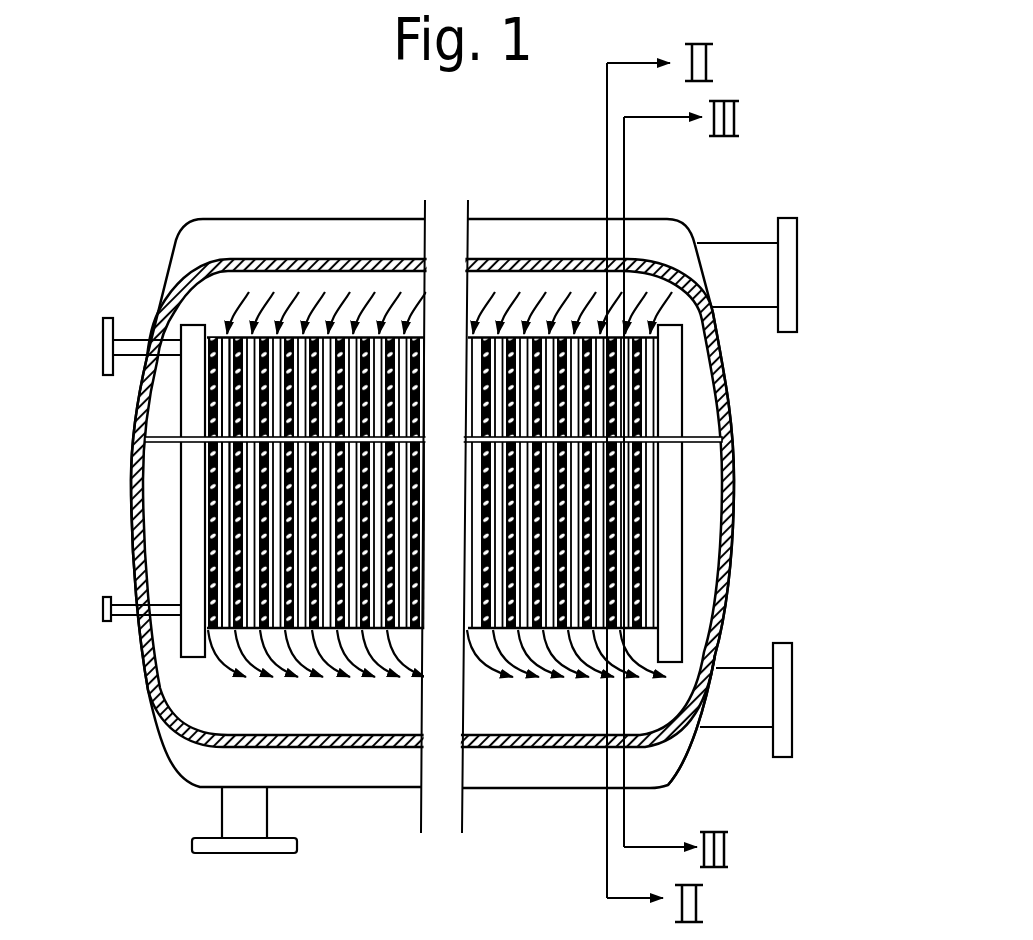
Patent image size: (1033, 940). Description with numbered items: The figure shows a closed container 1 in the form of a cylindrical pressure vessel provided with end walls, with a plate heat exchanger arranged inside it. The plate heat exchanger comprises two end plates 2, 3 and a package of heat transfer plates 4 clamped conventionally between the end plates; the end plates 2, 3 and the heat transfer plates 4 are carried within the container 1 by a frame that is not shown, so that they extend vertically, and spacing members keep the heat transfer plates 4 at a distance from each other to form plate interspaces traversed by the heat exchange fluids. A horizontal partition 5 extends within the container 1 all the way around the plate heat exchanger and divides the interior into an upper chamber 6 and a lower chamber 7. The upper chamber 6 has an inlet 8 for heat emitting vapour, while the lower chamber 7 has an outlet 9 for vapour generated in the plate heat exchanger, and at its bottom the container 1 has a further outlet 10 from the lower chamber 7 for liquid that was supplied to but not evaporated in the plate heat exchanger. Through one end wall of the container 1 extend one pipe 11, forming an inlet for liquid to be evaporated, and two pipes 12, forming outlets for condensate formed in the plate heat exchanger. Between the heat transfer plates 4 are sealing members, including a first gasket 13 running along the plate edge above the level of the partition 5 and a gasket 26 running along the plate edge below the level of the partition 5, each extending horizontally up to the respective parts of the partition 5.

The container 1 is at (213, 242).
The end plate 2 is at (190, 338).
The end plate 3 is at (673, 400).
The heat transfer plates 4 is at (653, 552).
The partition 5 is at (722, 441).
The upper chamber 6 is at (708, 417).
The lower chamber 7 is at (700, 630).
The inlet 8 is at (768, 263).
The outlet 9 is at (747, 706).
The outlet 10 is at (243, 827).
The pipe 11 is at (106, 330).
The pipes 12 is at (108, 602).
The first gasket 13 is at (212, 400).
The gasket 26 is at (223, 545).